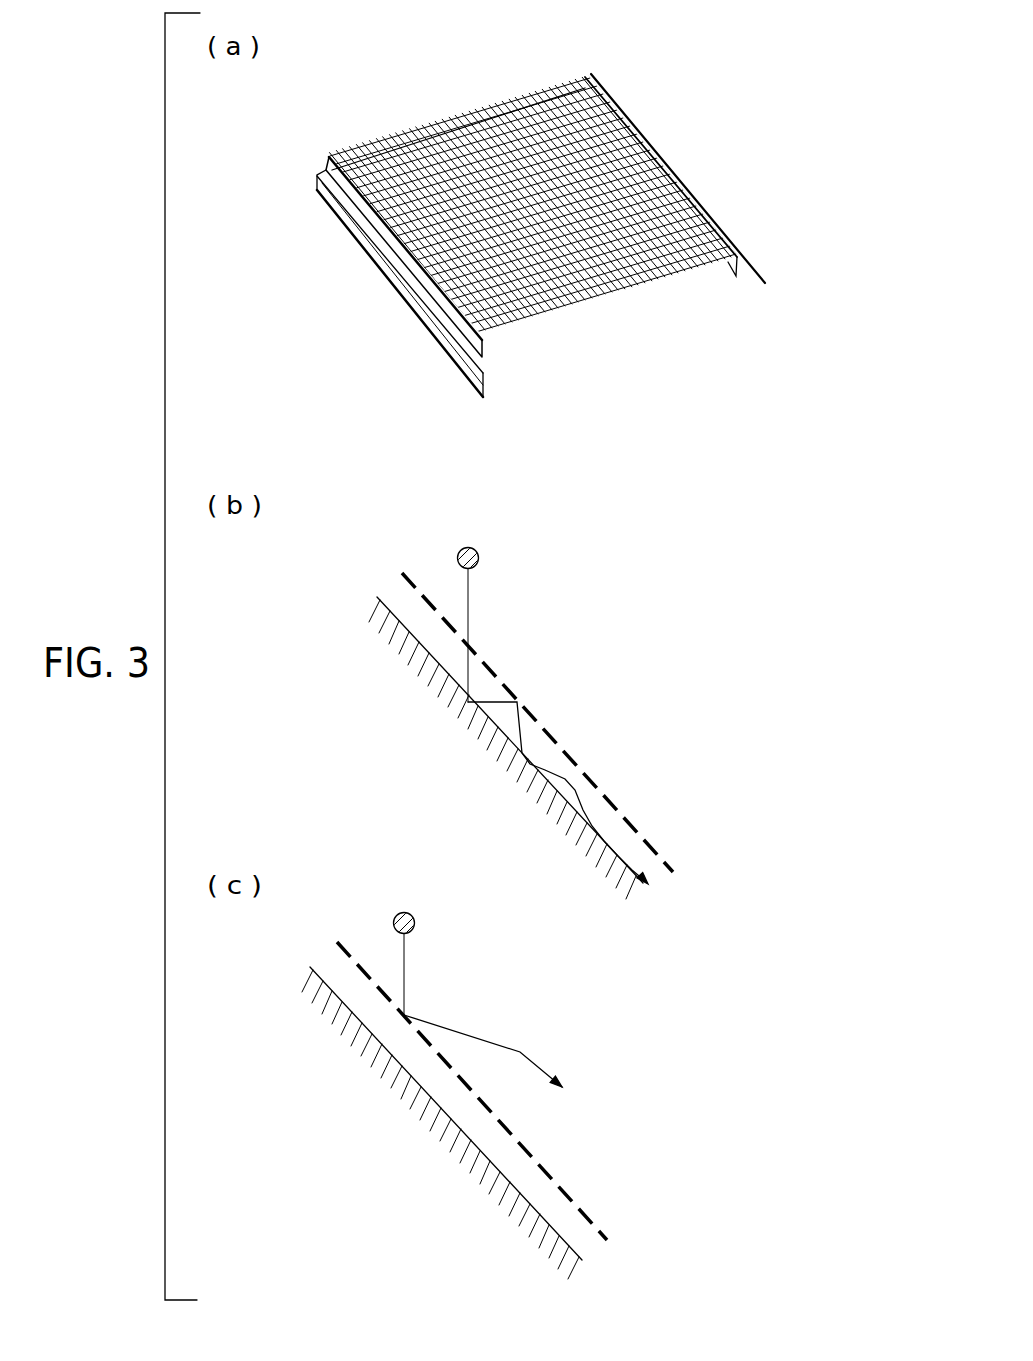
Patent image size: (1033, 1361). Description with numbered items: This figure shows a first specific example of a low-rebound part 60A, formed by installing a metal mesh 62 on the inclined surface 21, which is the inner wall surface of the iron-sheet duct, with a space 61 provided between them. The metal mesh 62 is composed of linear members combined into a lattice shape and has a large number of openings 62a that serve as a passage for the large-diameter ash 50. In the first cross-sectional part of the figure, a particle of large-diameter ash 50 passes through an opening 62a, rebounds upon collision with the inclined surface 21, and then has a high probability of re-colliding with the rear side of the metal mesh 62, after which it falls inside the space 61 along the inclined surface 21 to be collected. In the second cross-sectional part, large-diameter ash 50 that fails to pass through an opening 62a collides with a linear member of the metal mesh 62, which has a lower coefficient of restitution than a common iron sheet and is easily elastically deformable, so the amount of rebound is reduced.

The low-rebound part 60A is at (534, 658).
The metal mesh 62 is at (377, 138).
The opening 62a is at (572, 760).
The space 61 is at (695, 280).
The inclined surface 21 is at (352, 219).
The large-diameter ash 50 is at (480, 558).